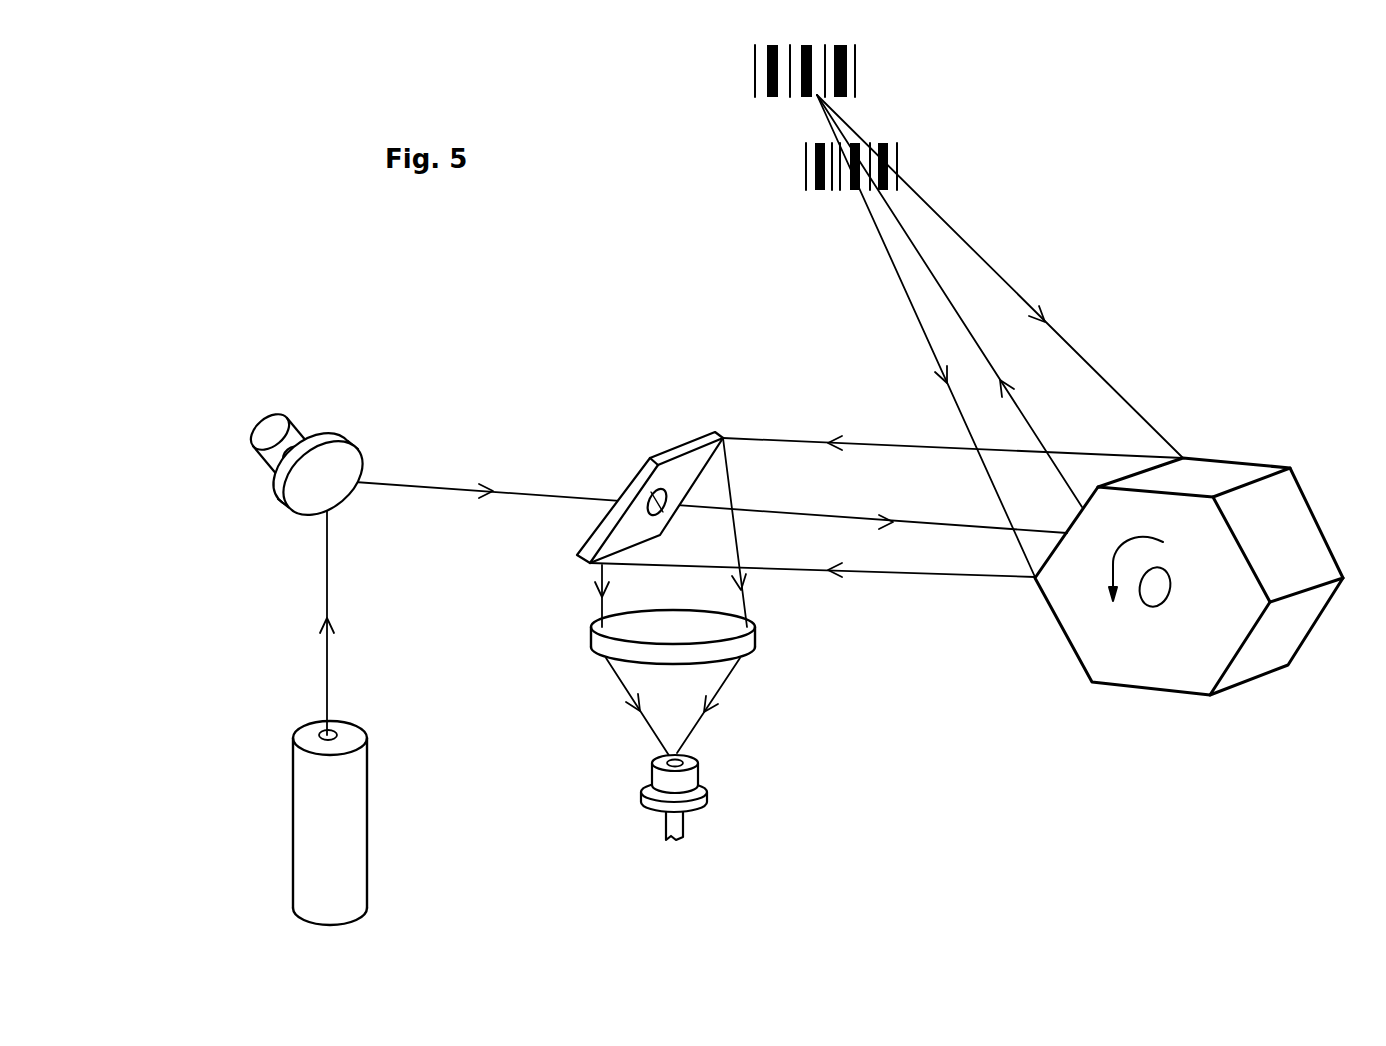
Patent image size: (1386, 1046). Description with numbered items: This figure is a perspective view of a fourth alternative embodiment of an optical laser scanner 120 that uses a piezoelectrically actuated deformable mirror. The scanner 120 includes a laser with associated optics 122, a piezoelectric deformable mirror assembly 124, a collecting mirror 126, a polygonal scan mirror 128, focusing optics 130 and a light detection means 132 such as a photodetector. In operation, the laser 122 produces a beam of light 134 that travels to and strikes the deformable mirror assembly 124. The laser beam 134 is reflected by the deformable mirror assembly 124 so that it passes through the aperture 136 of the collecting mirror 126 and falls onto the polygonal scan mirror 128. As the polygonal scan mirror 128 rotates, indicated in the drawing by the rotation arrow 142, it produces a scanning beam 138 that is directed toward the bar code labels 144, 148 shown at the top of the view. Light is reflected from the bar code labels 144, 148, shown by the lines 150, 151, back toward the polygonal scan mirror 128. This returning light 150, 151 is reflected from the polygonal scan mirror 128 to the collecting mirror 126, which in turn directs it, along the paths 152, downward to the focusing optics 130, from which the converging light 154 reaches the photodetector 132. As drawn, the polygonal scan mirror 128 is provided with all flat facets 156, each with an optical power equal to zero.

The optical laser scanner 120 is at (682, 285).
The laser with associated optics 122 is at (367, 810).
The piezoelectric deformable mirror assembly 124 is at (328, 425).
The collecting mirror 126 is at (650, 474).
The polygonal scan mirror 128 is at (1181, 581).
The focusing optics 130 is at (757, 634).
The light detection means 132 is at (710, 793).
The beam of light 134 is at (330, 578).
The aperture 136 is at (650, 495).
The scanning beam 138 is at (973, 340).
The rotation direction 142 is at (1132, 554).
The bar code label 144 is at (911, 163).
The bar code label 148 is at (872, 71).
The reflected light 150 is at (920, 322).
The reflected light 151 is at (1072, 348).
The reflected return light 152 is at (728, 481).
The focused light 154 is at (620, 695).
The flat facets 156 is at (1218, 470).